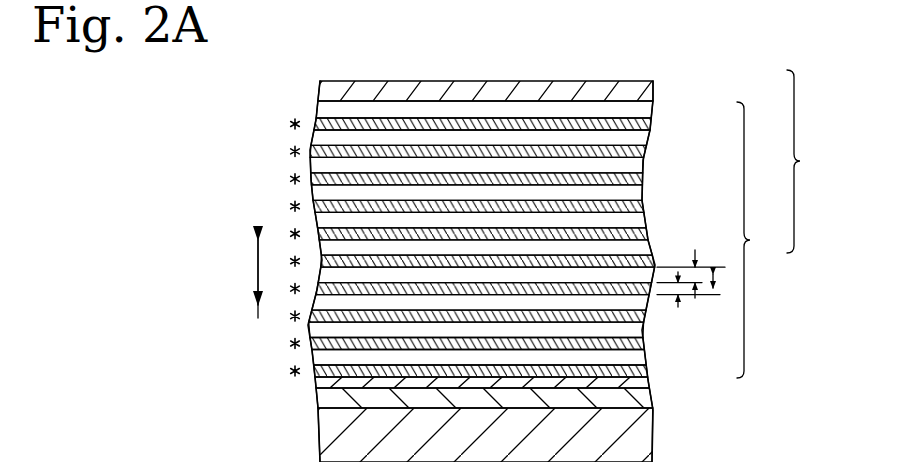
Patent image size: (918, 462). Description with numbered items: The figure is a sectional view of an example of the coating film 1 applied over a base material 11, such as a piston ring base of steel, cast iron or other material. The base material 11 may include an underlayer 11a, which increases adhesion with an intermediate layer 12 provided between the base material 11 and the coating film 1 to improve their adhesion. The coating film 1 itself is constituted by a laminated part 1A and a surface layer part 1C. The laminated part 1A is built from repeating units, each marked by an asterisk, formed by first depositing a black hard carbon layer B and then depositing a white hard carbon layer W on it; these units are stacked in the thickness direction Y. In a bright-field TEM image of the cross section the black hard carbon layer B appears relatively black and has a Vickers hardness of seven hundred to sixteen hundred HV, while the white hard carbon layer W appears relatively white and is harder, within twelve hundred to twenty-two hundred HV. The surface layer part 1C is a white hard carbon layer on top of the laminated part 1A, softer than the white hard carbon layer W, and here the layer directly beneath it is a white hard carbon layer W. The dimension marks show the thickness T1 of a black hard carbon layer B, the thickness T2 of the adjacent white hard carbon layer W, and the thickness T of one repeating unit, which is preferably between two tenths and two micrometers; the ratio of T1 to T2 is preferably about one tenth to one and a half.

The coating film 1 is at (800, 161).
The laminated part 1A is at (759, 240).
The surface layer part 1C is at (647, 92).
The white hard carbon layer W is at (637, 221).
The black hard carbon layer B is at (640, 233).
The intermediate layer 12 is at (640, 382).
The underlayer 11a is at (640, 398).
The base material 11 is at (640, 425).
The thickness of the repeating unit T is at (694, 280).
The thickness of the black hard carbon layer T1 is at (680, 290).
The thickness of the white hard carbon layer T2 is at (695, 277).
The thickness direction Y is at (247, 272).